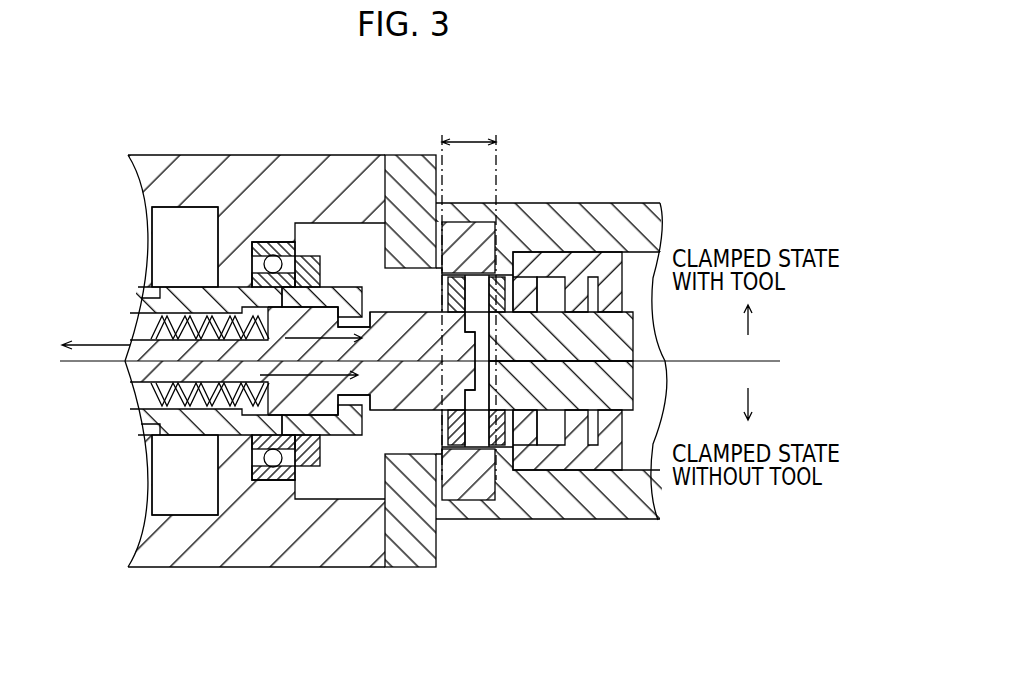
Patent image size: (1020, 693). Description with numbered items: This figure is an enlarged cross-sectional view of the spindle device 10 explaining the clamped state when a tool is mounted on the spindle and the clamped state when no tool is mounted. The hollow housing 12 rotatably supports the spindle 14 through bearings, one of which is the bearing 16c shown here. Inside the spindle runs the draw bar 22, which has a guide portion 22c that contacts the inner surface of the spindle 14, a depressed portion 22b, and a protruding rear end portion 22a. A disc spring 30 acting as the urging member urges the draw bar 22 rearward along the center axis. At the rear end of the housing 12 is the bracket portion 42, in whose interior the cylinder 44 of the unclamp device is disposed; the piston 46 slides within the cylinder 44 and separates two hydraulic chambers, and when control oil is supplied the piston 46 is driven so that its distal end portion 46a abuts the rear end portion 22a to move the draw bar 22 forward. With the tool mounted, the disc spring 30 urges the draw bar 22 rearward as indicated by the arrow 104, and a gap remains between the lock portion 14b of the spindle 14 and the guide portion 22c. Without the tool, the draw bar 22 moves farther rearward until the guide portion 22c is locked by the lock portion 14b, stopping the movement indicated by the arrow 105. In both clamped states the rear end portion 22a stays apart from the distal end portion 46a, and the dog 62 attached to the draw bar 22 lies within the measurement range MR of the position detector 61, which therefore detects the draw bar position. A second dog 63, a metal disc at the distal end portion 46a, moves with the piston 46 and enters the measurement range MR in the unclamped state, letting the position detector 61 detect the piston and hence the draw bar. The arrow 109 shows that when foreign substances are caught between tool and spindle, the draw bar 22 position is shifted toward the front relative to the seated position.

The spindle device 10 is at (702, 137).
The housing 12 is at (298, 530).
The spindle 14 is at (172, 432).
The lock portion 14b is at (351, 300).
The bearing 16c is at (273, 466).
The draw bar 22 is at (430, 412).
The rear end portion 22a is at (468, 393).
The depressed portion 22b is at (362, 412).
The guide portion 22c is at (300, 290).
The disc spring 30 is at (205, 435).
The bracket portion 42 is at (645, 497).
The cylinder 44 is at (607, 453).
The piston 46 is at (573, 440).
The distal end portion 46a is at (527, 413).
The position detector 61 is at (485, 250).
The dog 62 is at (445, 294).
The dog 63 is at (512, 282).
The arrow 104 is at (285, 310).
The arrow 105 is at (257, 370).
The arrow 109 is at (95, 317).
The measurement range MR is at (469, 296).